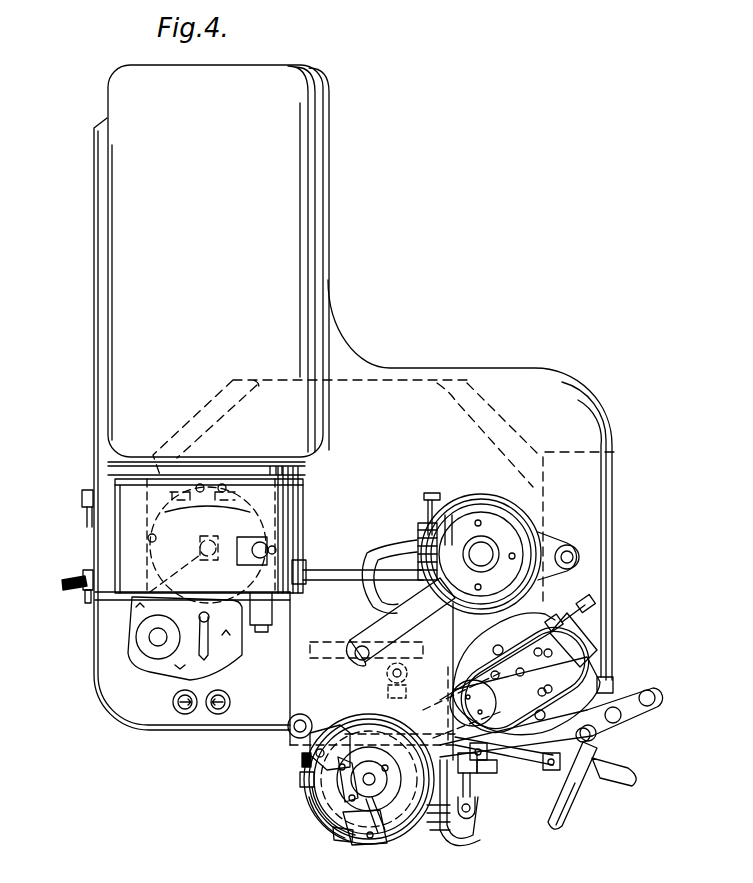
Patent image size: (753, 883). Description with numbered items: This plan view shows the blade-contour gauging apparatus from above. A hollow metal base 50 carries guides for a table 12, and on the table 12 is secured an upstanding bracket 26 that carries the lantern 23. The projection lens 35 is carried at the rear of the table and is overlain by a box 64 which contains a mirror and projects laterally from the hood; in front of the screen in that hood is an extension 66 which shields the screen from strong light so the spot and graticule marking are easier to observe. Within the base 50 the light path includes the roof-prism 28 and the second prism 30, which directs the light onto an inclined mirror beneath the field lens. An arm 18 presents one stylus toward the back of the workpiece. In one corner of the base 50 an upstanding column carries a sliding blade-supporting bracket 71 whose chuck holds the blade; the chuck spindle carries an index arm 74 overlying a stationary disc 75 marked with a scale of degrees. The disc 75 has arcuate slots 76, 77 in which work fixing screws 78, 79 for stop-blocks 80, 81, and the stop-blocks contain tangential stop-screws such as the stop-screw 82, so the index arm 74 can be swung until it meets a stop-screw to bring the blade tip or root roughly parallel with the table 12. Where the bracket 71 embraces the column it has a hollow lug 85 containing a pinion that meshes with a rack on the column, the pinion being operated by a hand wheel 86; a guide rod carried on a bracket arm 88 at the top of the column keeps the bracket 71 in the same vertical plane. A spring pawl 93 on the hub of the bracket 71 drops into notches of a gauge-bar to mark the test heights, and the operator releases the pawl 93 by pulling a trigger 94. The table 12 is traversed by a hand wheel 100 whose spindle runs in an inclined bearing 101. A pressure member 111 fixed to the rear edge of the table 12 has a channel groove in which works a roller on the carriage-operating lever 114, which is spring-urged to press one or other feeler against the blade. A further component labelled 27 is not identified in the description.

The table 12 is at (298, 685).
The arm 18 is at (470, 835).
The lantern 23 is at (510, 512).
The upstanding bracket 26 is at (403, 610).
The mounting lug 27 is at (543, 547).
The roof-prism 28 is at (622, 457).
The second prism 30 is at (208, 405).
The projection lens 35 is at (112, 597).
The hollow metal base 50 is at (592, 473).
The box 64 is at (120, 345).
The extension of the hood 66 is at (127, 547).
The blade-supporting bracket 71 is at (478, 787).
The index arm 74 is at (327, 803).
The stationary disc 75 is at (403, 835).
The arcuate slot 76 is at (380, 830).
The arcuate slot 77 is at (343, 763).
The fixing screw 78 is at (372, 832).
The fixing screw 79 is at (318, 748).
The stop-block 80 is at (360, 828).
The stop-block 81 is at (325, 770).
The tangential stop-screw 82 is at (303, 788).
The hollow lug 85 is at (583, 643).
The hand wheel 86 is at (640, 707).
The bracket arm 88 is at (490, 750).
The spring pawl 93 is at (597, 667).
The trigger 94 is at (600, 735).
The hand wheel 100 is at (577, 797).
The inclined bearing 101 is at (553, 822).
The pressure member 111 is at (385, 577).
The carriage-operating lever 114 is at (332, 570).